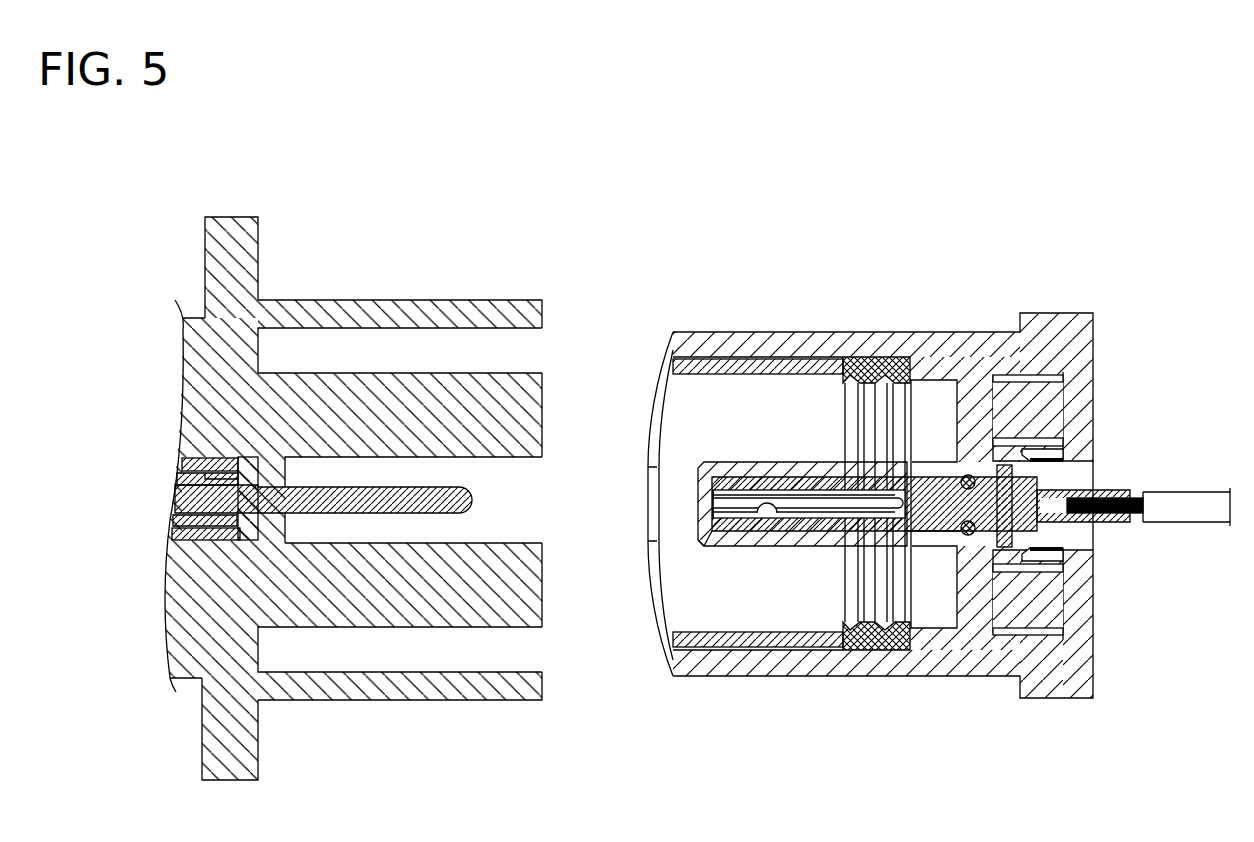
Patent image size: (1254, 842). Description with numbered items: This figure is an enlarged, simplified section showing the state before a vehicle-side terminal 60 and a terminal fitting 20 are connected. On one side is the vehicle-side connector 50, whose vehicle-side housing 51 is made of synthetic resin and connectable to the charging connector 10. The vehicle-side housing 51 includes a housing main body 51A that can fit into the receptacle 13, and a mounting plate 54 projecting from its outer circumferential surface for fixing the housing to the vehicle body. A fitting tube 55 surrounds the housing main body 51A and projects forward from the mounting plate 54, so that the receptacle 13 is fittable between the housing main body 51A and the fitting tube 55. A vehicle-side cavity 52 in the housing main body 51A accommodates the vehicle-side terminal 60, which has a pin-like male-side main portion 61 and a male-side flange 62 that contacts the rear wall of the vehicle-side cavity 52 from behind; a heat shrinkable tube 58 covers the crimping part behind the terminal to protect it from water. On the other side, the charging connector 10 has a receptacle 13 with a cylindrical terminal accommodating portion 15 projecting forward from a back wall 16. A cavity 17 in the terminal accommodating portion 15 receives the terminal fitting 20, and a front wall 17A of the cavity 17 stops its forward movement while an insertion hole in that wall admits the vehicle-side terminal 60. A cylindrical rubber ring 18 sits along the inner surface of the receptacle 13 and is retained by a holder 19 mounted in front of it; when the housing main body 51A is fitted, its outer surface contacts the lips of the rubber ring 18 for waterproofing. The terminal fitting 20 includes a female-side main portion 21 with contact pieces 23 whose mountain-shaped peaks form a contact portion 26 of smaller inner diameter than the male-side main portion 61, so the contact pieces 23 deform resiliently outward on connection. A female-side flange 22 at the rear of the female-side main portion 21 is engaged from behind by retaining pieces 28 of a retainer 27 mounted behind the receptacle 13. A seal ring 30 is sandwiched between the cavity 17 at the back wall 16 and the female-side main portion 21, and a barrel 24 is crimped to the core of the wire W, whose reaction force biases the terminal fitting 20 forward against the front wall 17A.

The vehicle-side connector 50 is at (410, 186).
The vehicle-side housing 51 is at (485, 292).
The housing main body 51A is at (425, 400).
The mounting plate 54 is at (235, 235).
The fitting tube 55 is at (463, 692).
The vehicle-side terminal 60 is at (317, 526).
The vehicle-side cavity 52 is at (370, 546).
The male-side main portion 61 is at (340, 495).
The male-side flange 62 is at (215, 524).
The heat shrinkable tube 58 is at (212, 528).
The charging connector 10 is at (925, 197).
The receptacle 13 is at (794, 326).
The back wall 16 is at (972, 410).
The retainer 27 is at (1068, 392).
The retaining piece 28 is at (1043, 457).
The holder 19 is at (698, 362).
The contact piece 23 is at (820, 487).
The rubber ring 18 is at (887, 650).
The terminal accommodating portion 15 is at (768, 460).
The female-side main portion 21 is at (932, 485).
The female-side flange 22 is at (1002, 468).
The cavity 17 is at (795, 522).
The front wall 17A is at (707, 527).
The contact portion 26 is at (767, 505).
The terminal fitting 20 is at (930, 538).
The seal ring 30 is at (970, 536).
The barrel 24 is at (1110, 492).
The wire W is at (1198, 500).